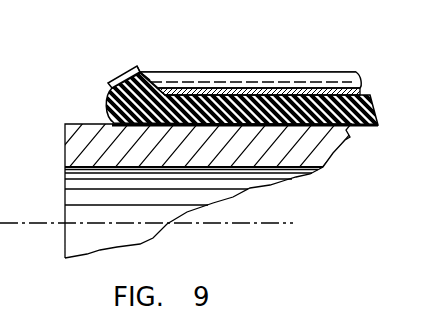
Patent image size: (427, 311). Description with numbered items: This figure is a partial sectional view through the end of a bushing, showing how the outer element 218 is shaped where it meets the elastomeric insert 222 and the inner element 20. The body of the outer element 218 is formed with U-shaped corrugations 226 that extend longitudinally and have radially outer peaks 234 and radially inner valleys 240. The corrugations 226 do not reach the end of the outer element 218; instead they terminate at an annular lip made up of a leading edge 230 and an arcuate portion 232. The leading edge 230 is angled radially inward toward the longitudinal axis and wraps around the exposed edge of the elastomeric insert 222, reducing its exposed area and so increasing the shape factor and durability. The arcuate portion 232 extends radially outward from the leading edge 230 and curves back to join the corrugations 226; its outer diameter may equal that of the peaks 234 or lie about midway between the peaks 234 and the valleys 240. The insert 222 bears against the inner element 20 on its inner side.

The inner element 20 is at (65, 147).
The outer element 218 is at (334, 71).
The elastomeric insert 222 is at (110, 104).
The corrugations 226 is at (190, 71).
The leading edge 230 is at (113, 82).
The arcuate portion 232 is at (138, 71).
The peaks 234 is at (245, 72).
The valleys 240 is at (295, 88).